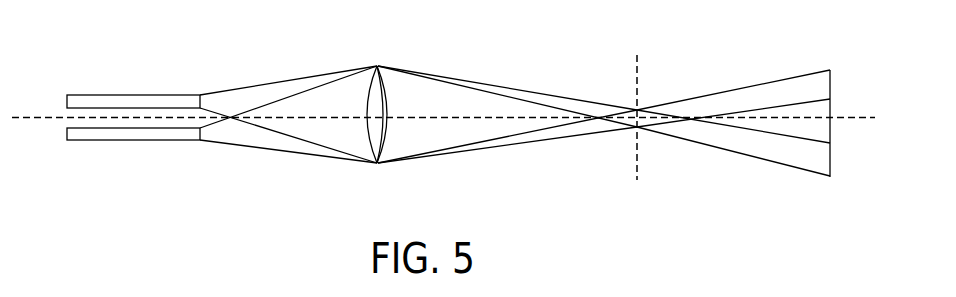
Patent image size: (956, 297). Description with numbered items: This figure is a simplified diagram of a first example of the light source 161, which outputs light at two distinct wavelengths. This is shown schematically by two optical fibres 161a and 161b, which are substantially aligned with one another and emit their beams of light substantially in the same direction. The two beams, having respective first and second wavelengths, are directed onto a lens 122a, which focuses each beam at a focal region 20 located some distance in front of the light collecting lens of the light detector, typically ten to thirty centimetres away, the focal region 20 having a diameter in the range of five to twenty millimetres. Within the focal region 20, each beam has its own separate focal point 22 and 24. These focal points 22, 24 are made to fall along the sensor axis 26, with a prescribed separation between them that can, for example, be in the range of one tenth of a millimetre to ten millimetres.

The light source 161 is at (137, 142).
The optical fibre 161a is at (177, 102).
The optical fibre 161b is at (178, 130).
The lens 122a is at (383, 75).
The focal region 20 is at (638, 108).
The focal point 22 is at (621, 137).
The focal point 24 is at (507, 114).
The sensor axis 26 is at (640, 151).